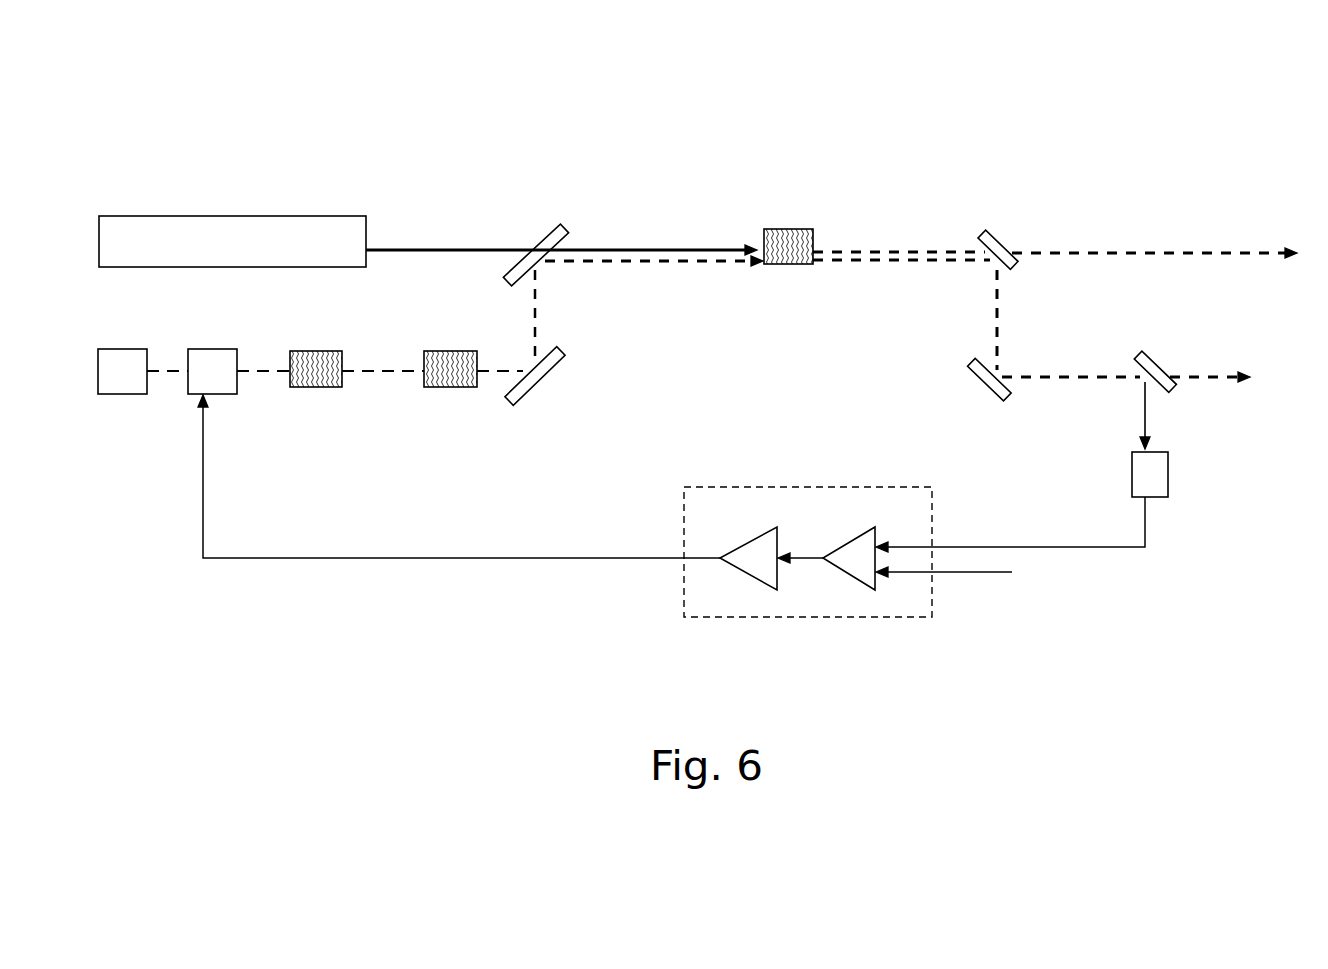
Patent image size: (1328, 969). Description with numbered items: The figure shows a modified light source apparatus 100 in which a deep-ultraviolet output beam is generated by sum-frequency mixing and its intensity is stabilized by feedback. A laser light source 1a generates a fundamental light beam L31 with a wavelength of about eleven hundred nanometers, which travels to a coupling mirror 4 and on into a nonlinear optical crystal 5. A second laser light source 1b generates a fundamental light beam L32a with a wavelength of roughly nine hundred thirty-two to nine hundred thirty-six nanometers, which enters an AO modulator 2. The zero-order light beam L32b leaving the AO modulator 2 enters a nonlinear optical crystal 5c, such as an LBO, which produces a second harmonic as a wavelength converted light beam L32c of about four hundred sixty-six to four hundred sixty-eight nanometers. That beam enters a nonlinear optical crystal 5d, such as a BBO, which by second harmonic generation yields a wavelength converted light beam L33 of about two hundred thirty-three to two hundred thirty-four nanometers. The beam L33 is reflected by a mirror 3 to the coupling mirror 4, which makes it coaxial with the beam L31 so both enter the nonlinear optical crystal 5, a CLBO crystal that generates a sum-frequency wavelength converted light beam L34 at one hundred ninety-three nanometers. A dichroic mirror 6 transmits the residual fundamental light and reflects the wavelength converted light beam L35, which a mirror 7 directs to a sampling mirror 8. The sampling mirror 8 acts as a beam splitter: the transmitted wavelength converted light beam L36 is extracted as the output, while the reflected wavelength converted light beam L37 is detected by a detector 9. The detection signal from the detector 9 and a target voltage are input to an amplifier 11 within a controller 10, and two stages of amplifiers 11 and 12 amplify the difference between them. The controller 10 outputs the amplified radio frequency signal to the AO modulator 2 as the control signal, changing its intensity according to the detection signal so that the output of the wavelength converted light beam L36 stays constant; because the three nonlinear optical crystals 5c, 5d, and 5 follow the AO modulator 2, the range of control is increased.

The light source apparatus 100 is at (217, 78).
The laser light source 1a is at (232, 216).
The laser light source 1b is at (130, 394).
The AO modulator 2 is at (225, 394).
The mirror 3 is at (555, 352).
The coupling mirror 4 is at (556, 228).
The nonlinear optical crystal 5 is at (788, 229).
The nonlinear optical crystal 5c is at (325, 387).
The nonlinear optical crystal 5d is at (455, 387).
The dichroic mirror 6 is at (990, 230).
The mirror 7 is at (968, 364).
The sampling mirror 8 is at (1150, 352).
The detector 9 is at (1168, 475).
The controller 10 is at (808, 524).
The amplifier 11 is at (875, 537).
The amplifier 12 is at (778, 537).
The fundamental light beam L31 is at (402, 250).
The fundamental light beam L32a is at (172, 368).
The zero-order light beam L32b is at (265, 368).
The wavelength converted light beam L32c is at (395, 368).
The wavelength converted light beam L33 is at (537, 323).
The wavelength converted light beam L34 is at (877, 263).
The wavelength converted light beam L35 is at (1040, 370).
The wavelength converted light beam L36 is at (1232, 372).
The wavelength converted light beam L37 is at (1146, 428).